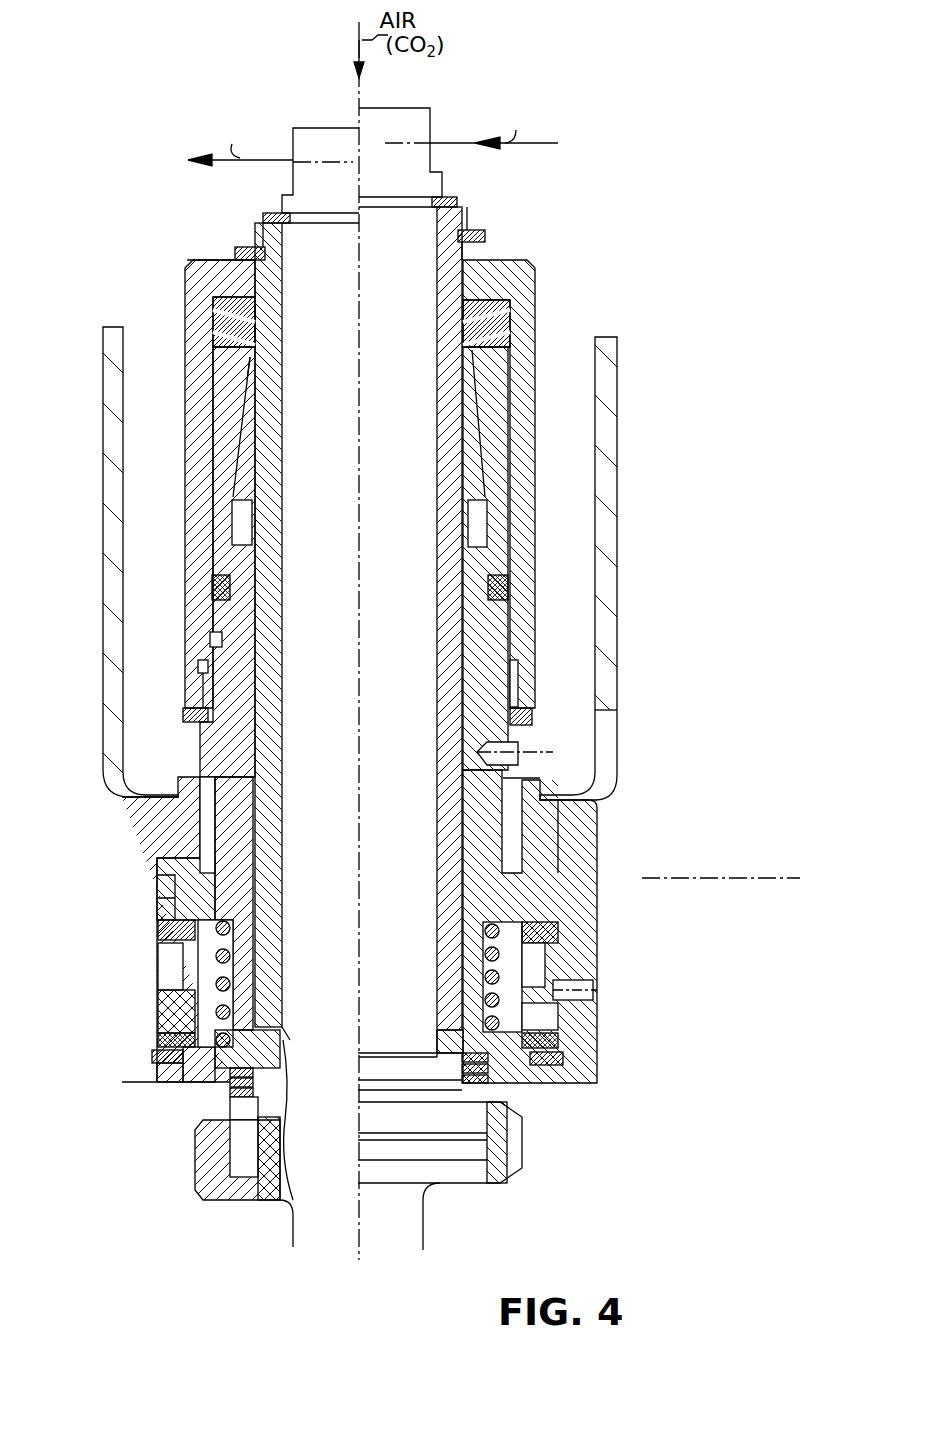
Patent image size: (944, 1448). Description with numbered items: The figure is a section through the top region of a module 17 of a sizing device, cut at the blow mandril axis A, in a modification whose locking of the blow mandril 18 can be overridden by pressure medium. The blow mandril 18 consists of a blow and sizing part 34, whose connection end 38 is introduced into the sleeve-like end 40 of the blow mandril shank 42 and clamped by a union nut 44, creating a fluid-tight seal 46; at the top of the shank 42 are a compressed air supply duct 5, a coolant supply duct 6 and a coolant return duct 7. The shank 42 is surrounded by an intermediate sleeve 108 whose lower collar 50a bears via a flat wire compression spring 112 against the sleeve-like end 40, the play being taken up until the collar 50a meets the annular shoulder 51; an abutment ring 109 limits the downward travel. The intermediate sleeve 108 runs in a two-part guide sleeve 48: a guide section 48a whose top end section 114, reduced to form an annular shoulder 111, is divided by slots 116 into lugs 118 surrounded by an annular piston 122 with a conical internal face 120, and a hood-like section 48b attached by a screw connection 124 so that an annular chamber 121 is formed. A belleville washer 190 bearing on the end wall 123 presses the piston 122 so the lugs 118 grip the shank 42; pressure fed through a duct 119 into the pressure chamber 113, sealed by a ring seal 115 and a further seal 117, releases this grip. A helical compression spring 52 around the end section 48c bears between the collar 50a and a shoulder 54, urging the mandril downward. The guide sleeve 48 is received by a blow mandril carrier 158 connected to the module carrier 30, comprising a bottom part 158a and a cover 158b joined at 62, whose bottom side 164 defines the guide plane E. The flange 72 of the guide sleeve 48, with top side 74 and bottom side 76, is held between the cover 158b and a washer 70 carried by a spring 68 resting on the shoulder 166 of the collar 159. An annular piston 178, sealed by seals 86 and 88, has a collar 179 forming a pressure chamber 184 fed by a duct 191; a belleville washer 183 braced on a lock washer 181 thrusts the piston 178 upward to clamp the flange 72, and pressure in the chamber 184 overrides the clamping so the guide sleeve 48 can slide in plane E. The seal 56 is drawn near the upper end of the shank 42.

The compressed air supply duct 5 is at (365, 108).
The coolant supply duct 6 is at (445, 140).
The coolant return duct 7 is at (272, 152).
The module 17 is at (692, 850).
The blow mandril 18 is at (533, 1208).
The module carrier 30 is at (610, 357).
The blow and sizing part 34 is at (425, 1225).
The connection end 38 is at (228, 1175).
The sleeve-like end 40 is at (230, 1110).
The blow mandril shank 42 is at (400, 408).
The union nut 44 is at (500, 1160).
The seal 46 is at (262, 1150).
The guide sleeve 48 is at (205, 812).
The guide section 48a is at (230, 738).
The hood-like section 48b is at (548, 285).
The end section 48c is at (245, 987).
The collar 50a is at (230, 1062).
The annular shoulder 51 is at (280, 1068).
The helical compression spring 52 is at (230, 945).
The shoulder 54 is at (215, 917).
The seal 56 is at (455, 202).
The screw connection location 62 is at (597, 873).
The spring 68 is at (558, 935).
The washer 70 is at (490, 920).
The flange 72 is at (170, 880).
The top side 74 is at (200, 870).
The bottom side 76 is at (490, 936).
The seal 86 is at (493, 978).
The seal 88 is at (500, 1010).
The intermediate sleeve 108 is at (450, 438).
The abutment ring 109 is at (487, 236).
The annular shoulder 111 is at (215, 618).
The flat wire compression spring 112 is at (232, 1095).
The annular pressure chamber 113 is at (487, 618).
The top end section 114 is at (245, 577).
The ring seal 115 is at (487, 578).
The slots 116 is at (245, 455).
The seal 117 is at (213, 640).
The lugs 118 is at (470, 478).
The duct 119 is at (505, 752).
The conical internal face 120 is at (250, 402).
The annular chamber 121 is at (258, 318).
The annular piston 122 is at (225, 372).
The end wall 123 is at (220, 267).
The screw connection 124 is at (503, 690).
The blow mandril carrier 158 is at (597, 907).
The bottom part 158a is at (560, 958).
The cover 158b is at (597, 808).
The collar 159 is at (575, 990).
The bottom side 164 is at (470, 880).
The shoulder 166 is at (170, 928).
The annular piston 178 is at (175, 1025).
The collar 179 is at (570, 1035).
The lock washer 181 is at (530, 1065).
The belleville washer 183 is at (560, 1062).
The pressure chamber 184 is at (175, 970).
The belleville washer 190 is at (466, 318).
The duct 191 is at (558, 1008).
The blow mandril axis A is at (362, 268).
The guide plane E is at (715, 878).